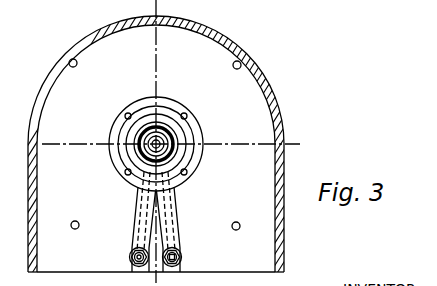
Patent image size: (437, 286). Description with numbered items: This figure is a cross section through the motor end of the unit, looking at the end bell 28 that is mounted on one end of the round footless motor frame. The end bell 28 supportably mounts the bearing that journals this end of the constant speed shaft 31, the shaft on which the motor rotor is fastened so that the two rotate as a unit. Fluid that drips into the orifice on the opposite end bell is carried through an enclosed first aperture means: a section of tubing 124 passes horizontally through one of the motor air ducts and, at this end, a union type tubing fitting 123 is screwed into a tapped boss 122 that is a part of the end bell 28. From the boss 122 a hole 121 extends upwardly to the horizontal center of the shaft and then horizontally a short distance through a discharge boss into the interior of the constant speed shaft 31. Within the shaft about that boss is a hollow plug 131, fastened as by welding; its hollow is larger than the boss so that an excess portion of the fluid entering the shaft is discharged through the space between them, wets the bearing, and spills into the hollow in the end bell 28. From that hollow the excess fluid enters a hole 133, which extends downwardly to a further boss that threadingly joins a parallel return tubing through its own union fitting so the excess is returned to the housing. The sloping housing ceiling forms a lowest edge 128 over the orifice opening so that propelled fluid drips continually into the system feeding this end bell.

The end bell 28 is at (275, 80).
The constant speed shaft 31 is at (170, 136).
The hole 133 is at (138, 200).
The hole 121 is at (170, 206).
The hollow plug 131 is at (133, 253).
The tubing 124 is at (134, 257).
The lowest edge 128 is at (142, 266).
The union type tubing fitting 123 is at (180, 252).
The boss 122 is at (181, 262).